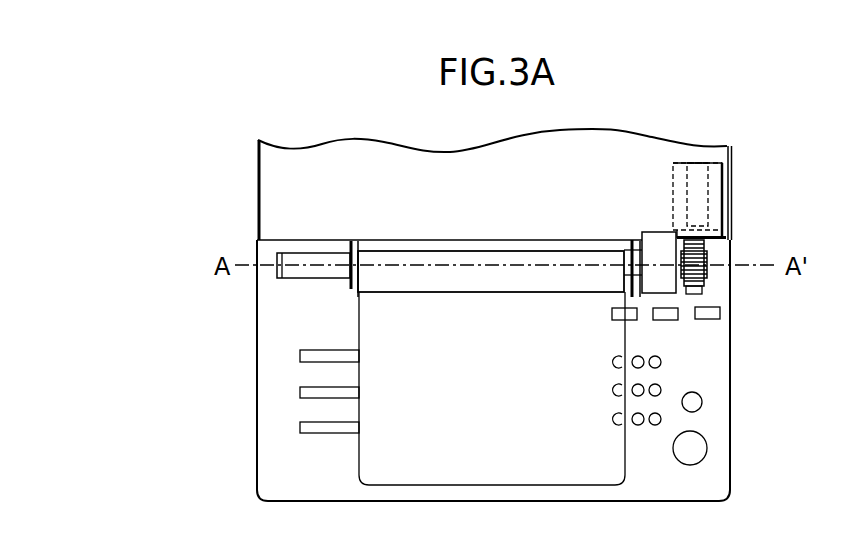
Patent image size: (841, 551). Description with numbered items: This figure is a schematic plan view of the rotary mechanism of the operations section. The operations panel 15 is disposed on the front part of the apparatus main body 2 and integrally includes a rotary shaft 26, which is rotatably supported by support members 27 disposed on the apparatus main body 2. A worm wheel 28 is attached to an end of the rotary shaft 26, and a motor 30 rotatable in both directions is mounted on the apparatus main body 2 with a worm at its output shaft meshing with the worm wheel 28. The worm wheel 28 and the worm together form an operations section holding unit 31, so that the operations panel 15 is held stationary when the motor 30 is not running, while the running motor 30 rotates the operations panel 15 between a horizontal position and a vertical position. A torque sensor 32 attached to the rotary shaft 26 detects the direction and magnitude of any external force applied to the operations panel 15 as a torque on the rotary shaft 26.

The apparatus main body 2 is at (555, 151).
The operations panel 15 is at (332, 482).
The rotary shaft 26 is at (293, 257).
The support members 27 is at (357, 249).
The worm wheel 28 is at (706, 258).
The motor 30 is at (700, 163).
The operations section holding unit 31 is at (706, 273).
The torque sensor 32 is at (655, 236).